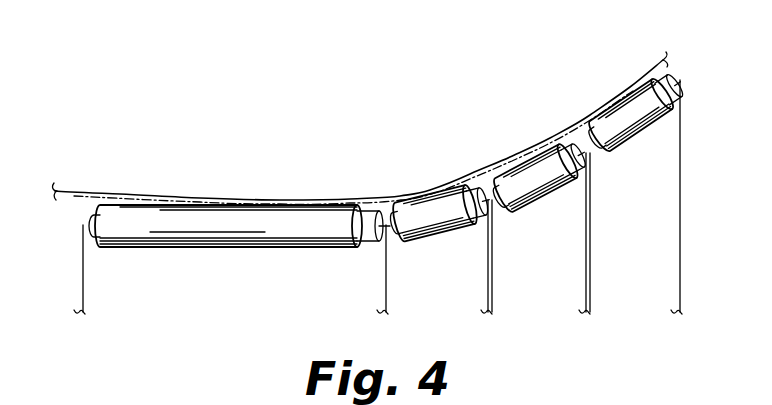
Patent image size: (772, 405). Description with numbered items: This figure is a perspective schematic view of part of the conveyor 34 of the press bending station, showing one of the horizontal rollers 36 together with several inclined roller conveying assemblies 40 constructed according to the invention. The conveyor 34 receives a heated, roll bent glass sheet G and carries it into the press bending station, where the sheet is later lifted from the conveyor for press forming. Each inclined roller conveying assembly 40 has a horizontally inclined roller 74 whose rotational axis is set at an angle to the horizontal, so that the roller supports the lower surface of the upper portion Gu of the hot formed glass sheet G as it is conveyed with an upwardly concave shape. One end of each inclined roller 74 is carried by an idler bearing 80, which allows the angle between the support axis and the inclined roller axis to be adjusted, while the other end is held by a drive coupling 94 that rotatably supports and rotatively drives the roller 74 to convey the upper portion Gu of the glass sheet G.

The conveyor 34 is at (555, 105).
The horizontal rollers 36 is at (240, 199).
The inclined roller conveying assemblies 40 is at (430, 189).
The horizontally inclined roller 74 is at (437, 240).
The idler bearing 80 is at (391, 234).
The drive coupling 94 is at (478, 226).
The hot formed glass sheet G is at (477, 170).
The upper portion of the glass sheet Gu is at (542, 147).